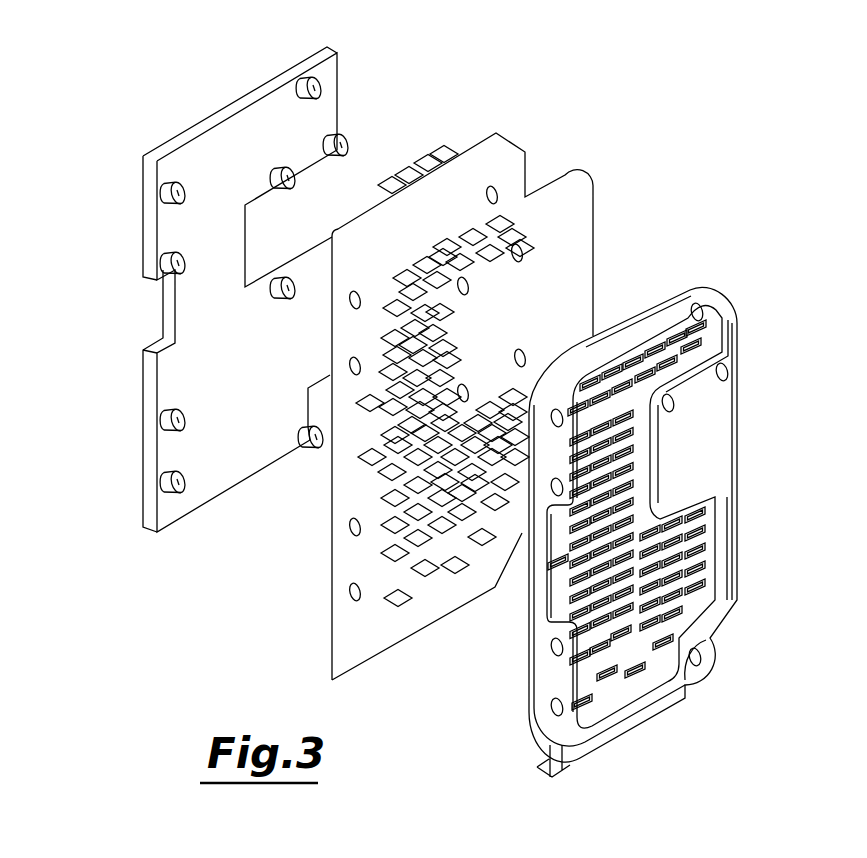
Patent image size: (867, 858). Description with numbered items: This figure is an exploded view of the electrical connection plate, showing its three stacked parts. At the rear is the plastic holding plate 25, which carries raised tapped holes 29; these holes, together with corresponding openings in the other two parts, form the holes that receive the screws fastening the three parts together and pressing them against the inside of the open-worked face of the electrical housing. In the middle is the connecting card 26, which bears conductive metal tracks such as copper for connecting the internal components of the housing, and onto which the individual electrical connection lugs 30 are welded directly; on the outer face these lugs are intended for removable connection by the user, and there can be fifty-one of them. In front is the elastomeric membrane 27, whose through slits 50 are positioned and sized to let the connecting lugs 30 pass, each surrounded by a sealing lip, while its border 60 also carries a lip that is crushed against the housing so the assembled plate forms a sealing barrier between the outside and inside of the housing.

The plastic holding plate 25 is at (205, 140).
The connecting card 26 is at (425, 192).
The elastomeric membrane 27 is at (708, 438).
The raised tapped holes 29 is at (302, 95).
The electrical connection lugs 30 is at (492, 252).
The through slits 50 is at (645, 340).
The border 60 is at (715, 640).